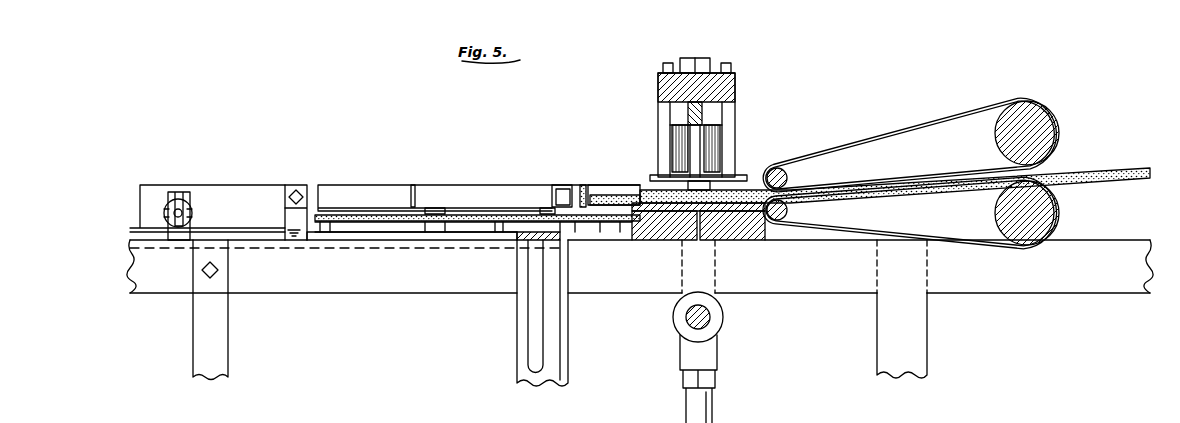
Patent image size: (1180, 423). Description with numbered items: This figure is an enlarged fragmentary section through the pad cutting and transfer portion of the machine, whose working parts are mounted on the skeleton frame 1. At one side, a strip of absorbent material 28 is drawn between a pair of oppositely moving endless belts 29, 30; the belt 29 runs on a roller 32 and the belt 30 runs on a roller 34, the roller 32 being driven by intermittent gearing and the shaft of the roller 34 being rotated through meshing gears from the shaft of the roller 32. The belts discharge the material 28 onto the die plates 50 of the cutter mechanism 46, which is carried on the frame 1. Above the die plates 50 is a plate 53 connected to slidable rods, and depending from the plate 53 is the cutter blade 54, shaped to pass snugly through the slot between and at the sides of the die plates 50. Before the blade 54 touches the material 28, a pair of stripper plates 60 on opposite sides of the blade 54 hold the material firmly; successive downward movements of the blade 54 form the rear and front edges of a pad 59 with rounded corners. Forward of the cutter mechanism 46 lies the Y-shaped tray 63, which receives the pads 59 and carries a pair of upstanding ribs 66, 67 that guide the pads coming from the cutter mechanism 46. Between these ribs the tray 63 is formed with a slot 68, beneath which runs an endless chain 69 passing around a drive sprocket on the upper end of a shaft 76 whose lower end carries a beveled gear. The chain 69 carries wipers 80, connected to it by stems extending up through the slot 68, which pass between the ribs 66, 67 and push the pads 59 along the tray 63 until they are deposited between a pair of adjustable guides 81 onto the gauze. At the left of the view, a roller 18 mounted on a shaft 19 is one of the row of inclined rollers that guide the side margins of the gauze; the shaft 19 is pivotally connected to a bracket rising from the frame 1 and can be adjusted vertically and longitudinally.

The skeleton frame 1 is at (1112, 266).
The rollers 18 is at (178, 195).
The shaft 19 is at (180, 232).
The strip of absorbent material 28 is at (1100, 170).
The endless belt 29 is at (840, 232).
The endless belt 30 is at (908, 128).
The roller 32 is at (1040, 213).
The roller 34 is at (1030, 125).
The cutter mechanism 46 is at (745, 222).
The die plates 50 is at (648, 205).
The plate 53 is at (677, 72).
The cutter blade 54 is at (707, 140).
The pad 59 is at (607, 194).
The stripper plates 60 is at (657, 176).
The tray 63 is at (573, 188).
The rib 66 is at (590, 185).
The rib 67 is at (601, 190).
The slot 68 is at (365, 215).
The endless chain 69 is at (397, 222).
The shaft 76 is at (530, 327).
The wipers 80 is at (414, 196).
The adjustable guides 81 is at (430, 212).